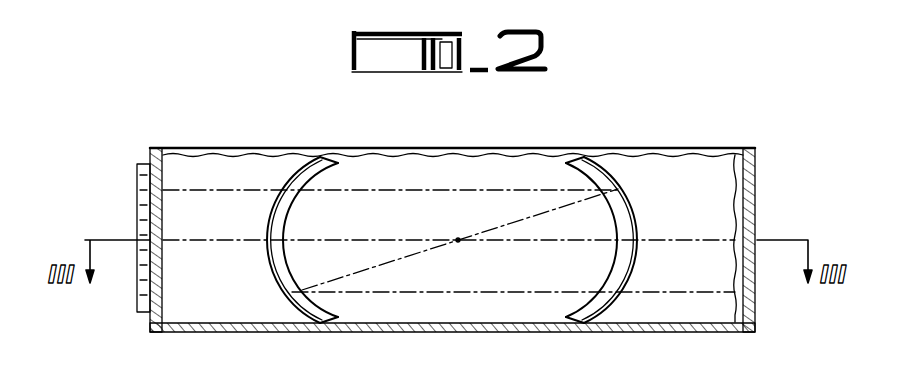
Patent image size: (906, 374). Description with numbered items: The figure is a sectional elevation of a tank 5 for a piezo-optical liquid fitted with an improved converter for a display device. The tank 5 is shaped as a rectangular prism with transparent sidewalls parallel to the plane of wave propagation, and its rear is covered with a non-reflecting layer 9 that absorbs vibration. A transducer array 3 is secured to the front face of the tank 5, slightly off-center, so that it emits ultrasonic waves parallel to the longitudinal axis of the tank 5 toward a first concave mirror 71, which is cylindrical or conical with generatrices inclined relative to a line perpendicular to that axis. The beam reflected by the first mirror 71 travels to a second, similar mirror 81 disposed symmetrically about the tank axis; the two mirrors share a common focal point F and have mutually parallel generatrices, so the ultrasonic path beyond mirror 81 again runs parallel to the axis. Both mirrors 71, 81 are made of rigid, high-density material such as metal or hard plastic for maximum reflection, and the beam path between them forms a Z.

The transducer array 3 is at (135, 194).
The tank 5 is at (757, 200).
The non-reflecting layer 9 is at (735, 186).
The first concave mirror 71 is at (566, 164).
The second concave mirror 81 is at (338, 165).
The common focal point F is at (459, 238).